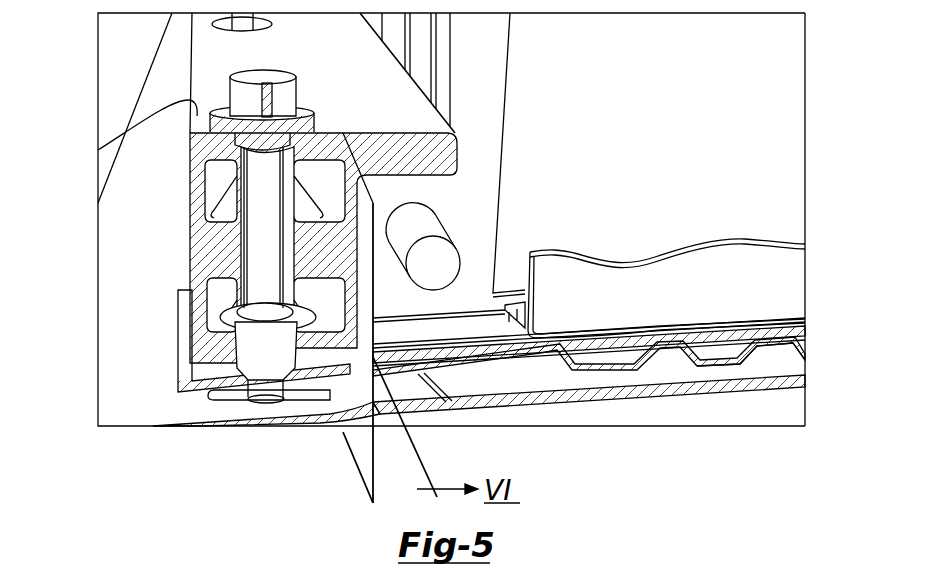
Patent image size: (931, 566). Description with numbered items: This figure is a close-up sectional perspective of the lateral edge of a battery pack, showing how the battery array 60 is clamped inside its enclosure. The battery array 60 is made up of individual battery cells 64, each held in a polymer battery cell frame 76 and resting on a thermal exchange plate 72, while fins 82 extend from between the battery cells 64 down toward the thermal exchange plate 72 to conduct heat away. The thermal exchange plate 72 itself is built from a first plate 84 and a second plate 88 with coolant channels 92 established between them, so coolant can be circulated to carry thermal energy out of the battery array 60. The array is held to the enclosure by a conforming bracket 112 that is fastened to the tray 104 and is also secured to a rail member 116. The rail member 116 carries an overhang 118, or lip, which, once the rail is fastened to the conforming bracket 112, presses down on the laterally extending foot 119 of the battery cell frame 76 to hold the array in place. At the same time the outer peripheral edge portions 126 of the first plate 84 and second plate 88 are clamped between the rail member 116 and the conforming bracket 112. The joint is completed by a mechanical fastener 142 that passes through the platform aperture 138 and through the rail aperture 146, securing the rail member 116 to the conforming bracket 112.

The battery array 60 is at (778, 106).
The battery cells 64 is at (785, 204).
The thermal exchange plate 72 is at (688, 372).
The battery cell frame 76 is at (492, 228).
The fins 82 is at (743, 263).
The first plate 84 is at (731, 347).
The second plate 88 is at (643, 368).
The coolant channels 92 is at (735, 357).
The tray 104 is at (133, 416).
The conforming brackets 112 is at (468, 378).
The rail member 116 is at (98, 150).
The overhang 118 is at (462, 153).
The laterally extending foot 119 is at (460, 200).
The outer peripheral edge portions 126 is at (338, 380).
The apertures 138 is at (258, 395).
The mechanical fastener 142 is at (276, 392).
The rail aperture 146 is at (247, 340).